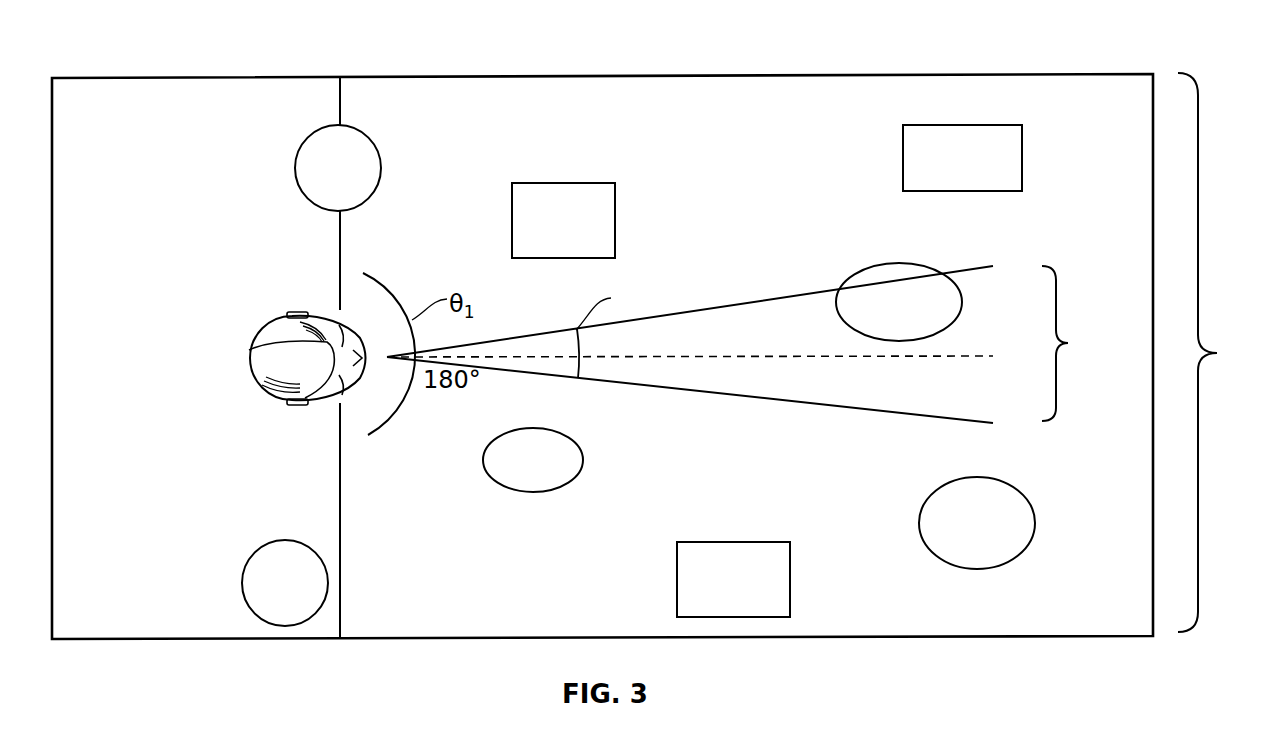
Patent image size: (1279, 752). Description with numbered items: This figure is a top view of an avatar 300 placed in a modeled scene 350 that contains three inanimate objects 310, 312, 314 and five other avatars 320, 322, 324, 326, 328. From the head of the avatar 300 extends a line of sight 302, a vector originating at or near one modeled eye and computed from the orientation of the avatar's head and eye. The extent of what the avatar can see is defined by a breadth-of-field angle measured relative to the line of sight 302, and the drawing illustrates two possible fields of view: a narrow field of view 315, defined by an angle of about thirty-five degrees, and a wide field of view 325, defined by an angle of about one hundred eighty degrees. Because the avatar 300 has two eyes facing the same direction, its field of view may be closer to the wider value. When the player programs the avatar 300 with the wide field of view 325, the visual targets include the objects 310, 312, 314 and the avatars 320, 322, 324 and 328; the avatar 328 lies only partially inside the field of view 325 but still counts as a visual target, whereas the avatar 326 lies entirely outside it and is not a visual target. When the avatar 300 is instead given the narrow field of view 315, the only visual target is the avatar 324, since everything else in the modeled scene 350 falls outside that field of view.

The avatar 300 is at (250, 356).
The line of sight 302 is at (957, 355).
The inanimate object 310 is at (734, 541).
The inanimate object 312 is at (563, 182).
The inanimate object 314 is at (963, 124).
The field of view 315 is at (1080, 343).
The avatar 320 is at (977, 477).
The avatar 322 is at (484, 462).
The avatar 324 is at (898, 263).
The field of view 325 is at (1224, 352).
The avatar 326 is at (242, 583).
The avatar 328 is at (296, 169).
The modeled scene 350 is at (121, 77).